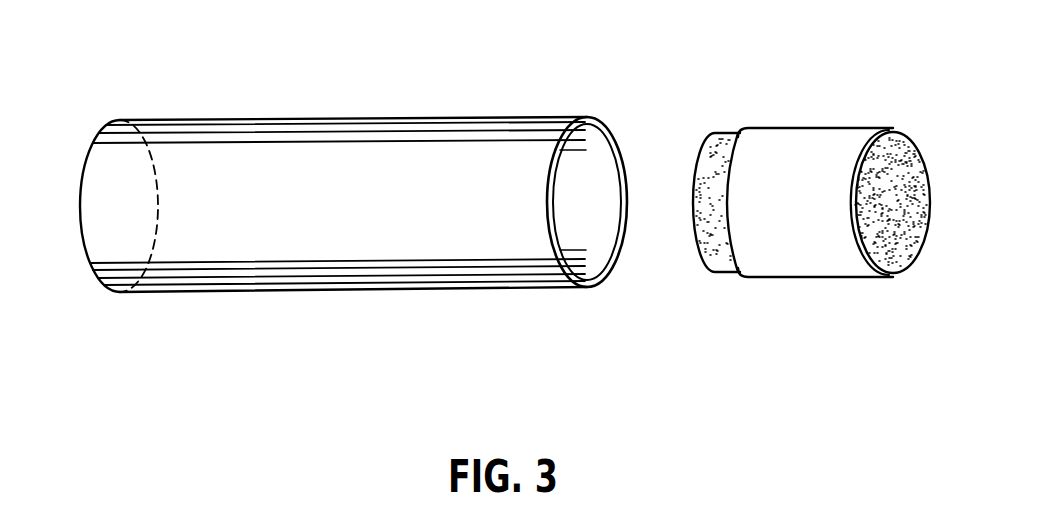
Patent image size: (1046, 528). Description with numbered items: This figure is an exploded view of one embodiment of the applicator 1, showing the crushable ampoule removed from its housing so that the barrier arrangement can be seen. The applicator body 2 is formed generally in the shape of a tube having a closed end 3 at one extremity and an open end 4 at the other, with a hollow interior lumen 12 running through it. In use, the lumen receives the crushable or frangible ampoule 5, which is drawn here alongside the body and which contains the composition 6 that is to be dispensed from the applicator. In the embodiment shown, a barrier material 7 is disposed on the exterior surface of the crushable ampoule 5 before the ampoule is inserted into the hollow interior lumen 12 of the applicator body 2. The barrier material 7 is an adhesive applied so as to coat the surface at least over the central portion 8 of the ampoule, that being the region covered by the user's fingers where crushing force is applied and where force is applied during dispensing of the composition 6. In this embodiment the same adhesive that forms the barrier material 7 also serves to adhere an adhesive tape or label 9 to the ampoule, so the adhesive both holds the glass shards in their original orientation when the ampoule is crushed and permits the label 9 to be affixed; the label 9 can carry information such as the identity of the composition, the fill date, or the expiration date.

The applicator 1 is at (457, 82).
The applicator body 2 is at (113, 169).
The closed end 3 is at (82, 246).
The open end 4 is at (618, 255).
The crushable ampoule 5 is at (721, 258).
The composition 6 is at (716, 202).
The barrier material 7 is at (808, 259).
The central portion 8 is at (838, 344).
The label 9 is at (890, 130).
The hollow interior lumen 12 is at (597, 183).